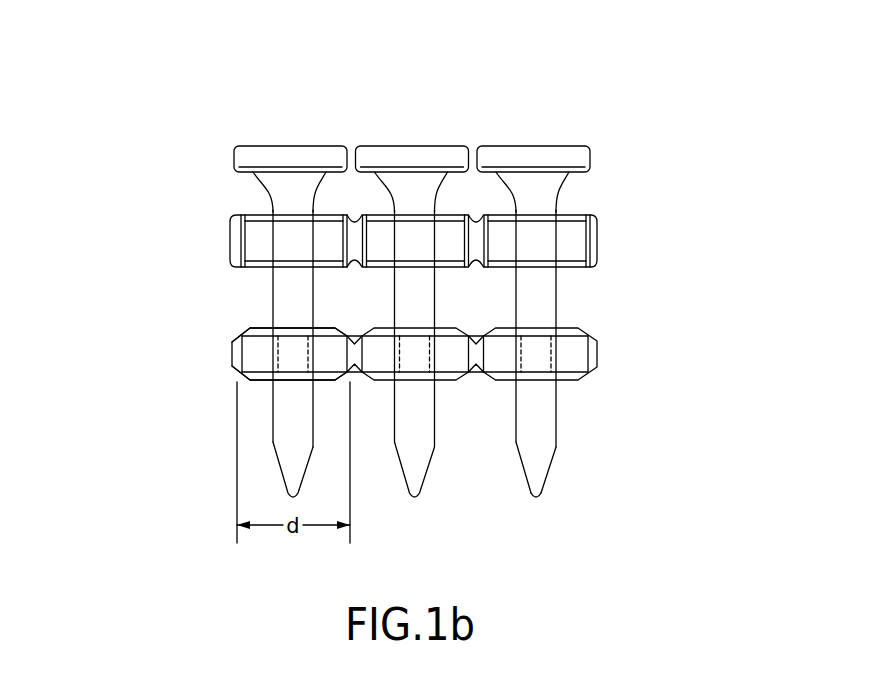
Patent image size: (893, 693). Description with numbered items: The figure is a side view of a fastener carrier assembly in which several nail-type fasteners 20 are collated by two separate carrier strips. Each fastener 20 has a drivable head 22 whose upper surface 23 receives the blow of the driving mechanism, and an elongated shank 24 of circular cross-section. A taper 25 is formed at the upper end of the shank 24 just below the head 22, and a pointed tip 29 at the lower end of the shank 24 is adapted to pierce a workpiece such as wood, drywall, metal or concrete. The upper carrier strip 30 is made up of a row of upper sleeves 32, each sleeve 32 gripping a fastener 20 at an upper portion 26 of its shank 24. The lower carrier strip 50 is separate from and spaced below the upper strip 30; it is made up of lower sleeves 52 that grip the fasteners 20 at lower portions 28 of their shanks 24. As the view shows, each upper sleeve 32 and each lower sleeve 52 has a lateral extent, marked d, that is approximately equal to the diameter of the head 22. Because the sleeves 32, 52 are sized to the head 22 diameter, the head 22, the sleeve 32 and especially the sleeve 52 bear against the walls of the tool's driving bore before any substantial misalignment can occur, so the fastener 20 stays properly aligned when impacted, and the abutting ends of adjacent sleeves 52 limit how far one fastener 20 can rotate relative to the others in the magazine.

The fastener 20 is at (544, 134).
The drivable head 22 is at (591, 153).
The surface 23 is at (562, 144).
The shank 24 is at (557, 300).
The taper 25 is at (568, 172).
The upper portion of shank 26 is at (560, 206).
The lower portion of shank 28 is at (557, 412).
The pointed tip 29 is at (540, 477).
The upper carrier strip 30 is at (222, 241).
The upper sleeve 32 is at (322, 227).
The lower carrier strip 50 is at (222, 353).
The lower sleeve 52 is at (257, 377).